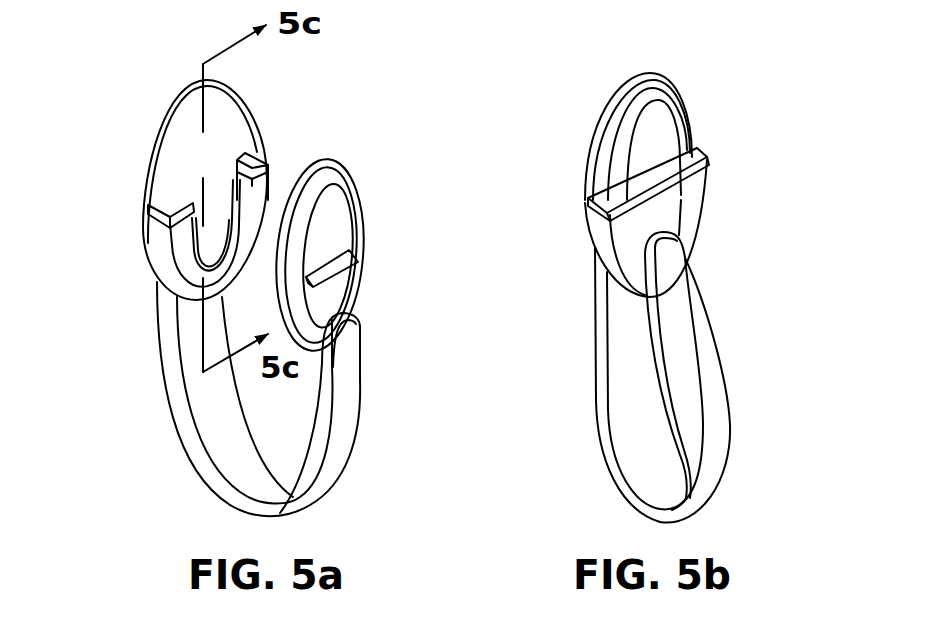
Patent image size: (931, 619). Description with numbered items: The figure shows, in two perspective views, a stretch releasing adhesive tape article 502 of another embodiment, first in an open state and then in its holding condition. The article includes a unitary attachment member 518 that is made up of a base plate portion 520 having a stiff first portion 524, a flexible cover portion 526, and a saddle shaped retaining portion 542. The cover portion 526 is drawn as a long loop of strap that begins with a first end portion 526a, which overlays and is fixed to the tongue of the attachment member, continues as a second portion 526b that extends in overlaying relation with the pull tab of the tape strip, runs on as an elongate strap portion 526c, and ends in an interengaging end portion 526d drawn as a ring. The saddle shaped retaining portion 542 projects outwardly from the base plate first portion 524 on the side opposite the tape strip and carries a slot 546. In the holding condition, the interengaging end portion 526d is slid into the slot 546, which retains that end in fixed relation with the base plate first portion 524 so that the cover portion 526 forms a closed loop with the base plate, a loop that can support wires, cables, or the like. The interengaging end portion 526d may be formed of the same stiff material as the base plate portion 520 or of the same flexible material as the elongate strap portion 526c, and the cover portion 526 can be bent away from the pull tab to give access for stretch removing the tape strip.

In FIG. 5a, the stretch releasing adhesive tape article 502 is at (132, 117).
In FIG. 5b, the stretch releasing adhesive tape article 502 is at (566, 126).
In FIG. 5a, the unitary attachment member 518 is at (250, 153).
In FIG. 5b, the unitary attachment member 518 is at (714, 211).
In FIG. 5a, the base plate portion 520 is at (160, 173).
In FIG. 5b, the base plate portion 520 is at (597, 177).
In FIG. 5a, the stiff first portion 524 is at (140, 245).
In FIG. 5b, the stiff first portion 524 is at (583, 243).
In FIG. 5a, the flexible cover portion 526 is at (203, 449).
In FIG. 5b, the flexible cover portion 526 is at (628, 439).
In FIG. 5a, the first end portion 526a is at (178, 318).
In FIG. 5b, the first end portion 526a is at (618, 327).
In FIG. 5a, the second portion 526b is at (170, 370).
In FIG. 5b, the second portion 526b is at (605, 358).
In FIG. 5a, the elongate strap portion 526c is at (348, 402).
In FIG. 5b, the elongate strap portion 526c is at (717, 413).
In FIG. 5a, the interengaging end portion 526d is at (355, 207).
In FIG. 5b, the interengaging end portion 526d is at (667, 102).
In FIG. 5a, the saddle shaped retaining portion 542 is at (236, 268).
In FIG. 5b, the saddle shaped retaining portion 542 is at (692, 227).
In FIG. 5a, the slot 546 is at (248, 157).
In FIG. 5b, the slot 546 is at (687, 155).